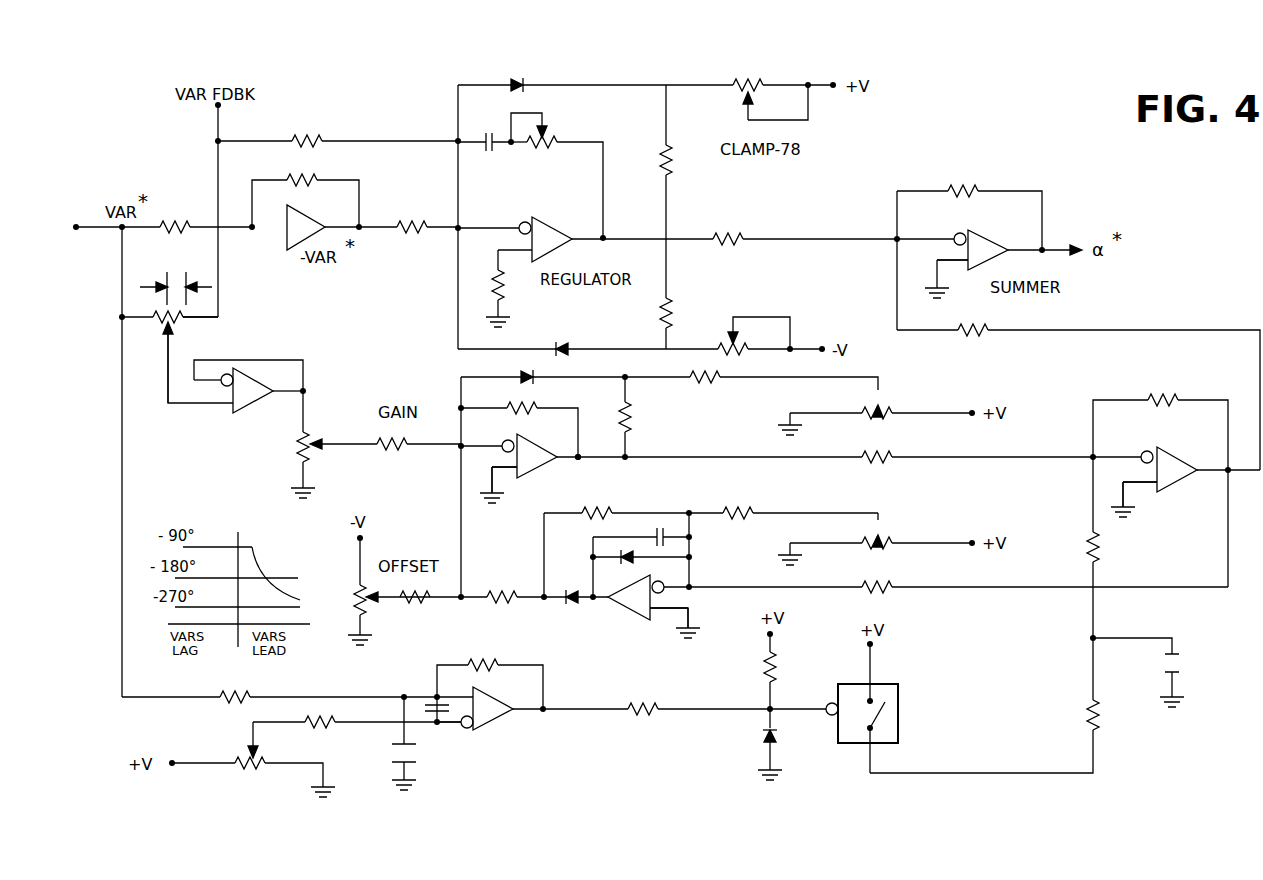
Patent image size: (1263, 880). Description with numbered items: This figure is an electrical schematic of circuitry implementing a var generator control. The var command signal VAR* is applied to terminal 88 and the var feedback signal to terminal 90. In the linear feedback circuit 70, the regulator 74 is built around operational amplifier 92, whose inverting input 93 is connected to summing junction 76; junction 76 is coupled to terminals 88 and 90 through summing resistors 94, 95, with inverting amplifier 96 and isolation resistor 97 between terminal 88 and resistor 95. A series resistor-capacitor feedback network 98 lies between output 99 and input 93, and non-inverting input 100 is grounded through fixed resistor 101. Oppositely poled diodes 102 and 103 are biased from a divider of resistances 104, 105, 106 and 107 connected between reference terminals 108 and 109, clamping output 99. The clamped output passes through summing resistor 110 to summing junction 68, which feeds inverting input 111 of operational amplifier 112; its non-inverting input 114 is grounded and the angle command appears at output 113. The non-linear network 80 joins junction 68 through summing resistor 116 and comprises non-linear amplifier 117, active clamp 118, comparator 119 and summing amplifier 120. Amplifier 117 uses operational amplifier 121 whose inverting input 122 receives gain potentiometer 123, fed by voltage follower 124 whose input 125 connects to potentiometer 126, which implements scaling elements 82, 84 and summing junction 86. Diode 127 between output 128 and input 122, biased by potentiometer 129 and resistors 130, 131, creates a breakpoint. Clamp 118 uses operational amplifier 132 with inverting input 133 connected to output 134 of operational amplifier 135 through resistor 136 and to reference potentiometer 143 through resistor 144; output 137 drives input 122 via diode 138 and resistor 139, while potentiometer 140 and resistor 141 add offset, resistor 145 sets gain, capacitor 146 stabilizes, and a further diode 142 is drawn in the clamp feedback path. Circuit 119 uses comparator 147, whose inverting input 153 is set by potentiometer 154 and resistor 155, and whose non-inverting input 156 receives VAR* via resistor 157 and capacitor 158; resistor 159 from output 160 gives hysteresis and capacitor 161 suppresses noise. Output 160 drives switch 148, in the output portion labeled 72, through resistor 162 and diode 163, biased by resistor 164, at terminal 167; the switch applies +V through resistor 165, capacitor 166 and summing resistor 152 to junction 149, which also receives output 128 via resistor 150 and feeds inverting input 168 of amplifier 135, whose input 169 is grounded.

The signal summing junction 68 is at (892, 234).
The linear feedback circuit 70 is at (426, 108).
The output circuit 72 is at (628, 738).
The regulator 74 is at (598, 307).
The signal summing junction 76 is at (458, 228).
The non-linear network 80 is at (371, 380).
The K signal scaling element 82 is at (152, 308).
The 1−K signal scaling element 84 is at (185, 325).
The summing junction 86 is at (160, 330).
The VAR* signal input terminal 88 is at (80, 240).
The VAR FDBK terminal 90 is at (204, 103).
The operational amplifier 92 is at (548, 220).
The inverting input 93 is at (523, 221).
The summing resistor 94 is at (318, 119).
The summing resistor 95 is at (420, 204).
The signal inverting operational amplifier 96 is at (305, 210).
The isolation resistor 97 is at (184, 204).
The series resistor-capacitor feedback network 98 is at (518, 158).
The output 99 is at (578, 236).
The non-inverting input 100 is at (518, 246).
The fixed resistor 101 is at (524, 282).
The diode 102 is at (525, 72).
The diode 103 is at (582, 343).
The variable resistance 104 is at (758, 70).
The resistance 105 is at (677, 158).
The resistance 106 is at (686, 312).
The variable resistance 107 is at (745, 360).
The +V reference voltage terminal 108 is at (838, 90).
The −V reference voltage terminal 109 is at (822, 345).
The summing resistor 110 is at (738, 218).
The inverting input 111 is at (949, 234).
The operational amplifier 112 is at (993, 234).
The output 113 is at (1012, 248).
The non-inverting input 114 is at (954, 257).
The summing resistor 116 is at (975, 340).
The non-linear amplifier 117 is at (540, 478).
The active clamp 118 is at (625, 618).
The comparator 119 is at (492, 740).
The summing amplifier 120 is at (1186, 495).
The operational amplifier 121 is at (548, 440).
The inverting input 122 is at (502, 438).
The gain setting potentiometer 123 is at (318, 456).
The voltage follower operational amplifier 124 is at (258, 405).
The non-inverting input 125 is at (228, 408).
The potentiometer 126 is at (190, 275).
The diode 127 is at (537, 386).
The operational amplifier output 128 is at (560, 462).
The potentiometer 129 is at (898, 403).
The voltage divider resistor 130 is at (712, 386).
The voltage divider resistor 131 is at (637, 418).
The operational amplifier 132 is at (622, 586).
The inverting input 133 is at (664, 594).
The output 134 is at (1208, 458).
The operational amplifier 135 is at (1180, 436).
The fixed resistor 136 is at (898, 576).
The output 137 is at (608, 604).
The diode 138 is at (572, 586).
The coupling resistor 139 is at (505, 584).
The potentiometer 140 is at (372, 608).
The fixed resistor 141 is at (428, 606).
The diode 142 is at (636, 566).
The potentiometer 143 is at (898, 533).
The resistor 144 is at (757, 500).
The resistor 145 is at (608, 506).
The capacitor 146 is at (655, 528).
The voltage comparator 147 is at (500, 724).
The electronic switch device 148 is at (898, 684).
The summing junction 149 is at (1082, 454).
The summing resistor 150 is at (898, 446).
The summing resistor 152 is at (1106, 546).
The inverting input 153 is at (466, 730).
The potentiometer 154 is at (240, 775).
The resistor 155 is at (322, 733).
The non-inverting input 156 is at (467, 694).
The fixed resistor 157 is at (214, 707).
The grounded capacitor 158 is at (390, 752).
The fixed resistor 159 is at (488, 655).
The output 160 is at (530, 692).
The fixed capacitor 161 is at (445, 727).
The resistor 162 is at (662, 690).
The diode 163 is at (756, 744).
The resistor 164 is at (757, 668).
The coupling resistor 165 is at (1108, 716).
The filter capacitor 166 is at (1190, 665).
The inverting input terminal 167 is at (820, 720).
The inverting input 168 is at (1140, 450).
The non-inverting input 169 is at (1142, 481).